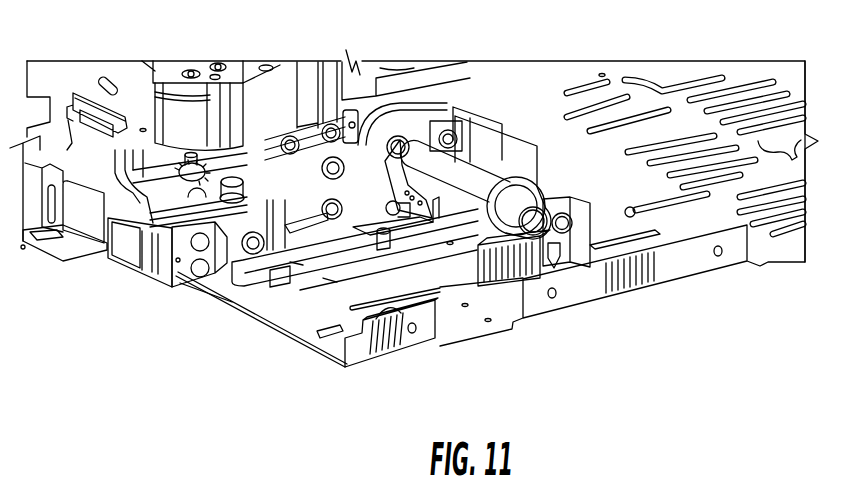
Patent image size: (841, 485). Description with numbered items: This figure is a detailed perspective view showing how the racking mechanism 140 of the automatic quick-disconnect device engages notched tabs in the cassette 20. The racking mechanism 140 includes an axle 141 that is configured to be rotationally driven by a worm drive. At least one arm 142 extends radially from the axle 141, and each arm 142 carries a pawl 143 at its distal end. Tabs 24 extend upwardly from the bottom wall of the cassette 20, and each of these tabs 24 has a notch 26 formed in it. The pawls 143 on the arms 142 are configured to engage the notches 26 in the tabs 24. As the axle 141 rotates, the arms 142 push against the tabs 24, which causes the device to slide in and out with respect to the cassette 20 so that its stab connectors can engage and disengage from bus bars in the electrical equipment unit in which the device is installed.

The cassette 20 is at (742, 75).
The tabs 24 is at (481, 287).
The notches 26 is at (553, 267).
The racking mechanism 140 is at (134, 304).
The axle 141 is at (467, 175).
The arm 142 is at (541, 204).
The pawl 143 is at (560, 200).